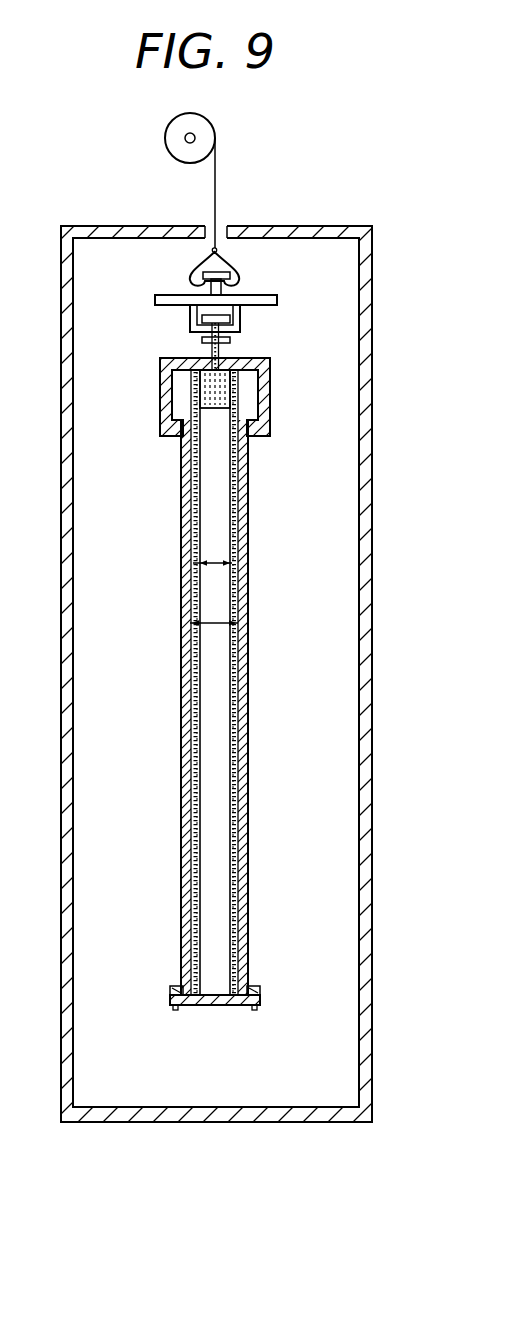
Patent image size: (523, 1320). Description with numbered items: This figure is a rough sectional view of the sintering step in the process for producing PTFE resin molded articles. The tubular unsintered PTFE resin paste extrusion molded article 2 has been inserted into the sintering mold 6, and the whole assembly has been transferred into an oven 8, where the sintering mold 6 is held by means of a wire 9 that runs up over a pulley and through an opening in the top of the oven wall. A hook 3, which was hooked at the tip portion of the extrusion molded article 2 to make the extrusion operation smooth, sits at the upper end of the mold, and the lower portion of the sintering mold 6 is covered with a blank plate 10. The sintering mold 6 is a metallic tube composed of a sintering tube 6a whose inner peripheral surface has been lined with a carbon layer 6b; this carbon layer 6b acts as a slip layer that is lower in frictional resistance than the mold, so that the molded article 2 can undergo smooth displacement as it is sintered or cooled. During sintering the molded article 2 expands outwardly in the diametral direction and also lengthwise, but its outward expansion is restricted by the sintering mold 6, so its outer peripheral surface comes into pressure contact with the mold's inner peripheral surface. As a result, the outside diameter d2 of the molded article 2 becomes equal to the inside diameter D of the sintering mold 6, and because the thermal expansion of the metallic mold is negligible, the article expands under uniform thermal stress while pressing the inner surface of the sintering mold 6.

The paste extrusion molded article 2 is at (229, 778).
The hook 3 is at (217, 390).
The sintering mold 6 is at (252, 672).
The sintering tube 6a is at (242, 604).
The carbon layer 6b is at (238, 636).
The oven 8 is at (365, 475).
The wire 9 is at (215, 188).
The blank plate 10 is at (222, 1005).
The inside diameter of the sintering mold D is at (203, 623).
The outside diameter of the molded article d2 is at (210, 563).